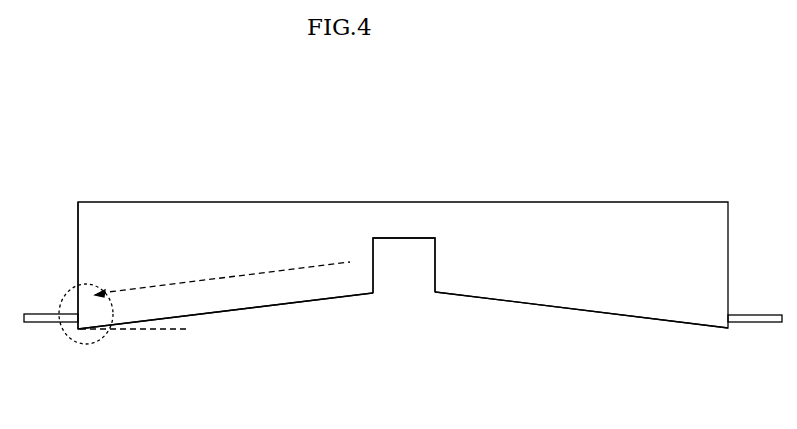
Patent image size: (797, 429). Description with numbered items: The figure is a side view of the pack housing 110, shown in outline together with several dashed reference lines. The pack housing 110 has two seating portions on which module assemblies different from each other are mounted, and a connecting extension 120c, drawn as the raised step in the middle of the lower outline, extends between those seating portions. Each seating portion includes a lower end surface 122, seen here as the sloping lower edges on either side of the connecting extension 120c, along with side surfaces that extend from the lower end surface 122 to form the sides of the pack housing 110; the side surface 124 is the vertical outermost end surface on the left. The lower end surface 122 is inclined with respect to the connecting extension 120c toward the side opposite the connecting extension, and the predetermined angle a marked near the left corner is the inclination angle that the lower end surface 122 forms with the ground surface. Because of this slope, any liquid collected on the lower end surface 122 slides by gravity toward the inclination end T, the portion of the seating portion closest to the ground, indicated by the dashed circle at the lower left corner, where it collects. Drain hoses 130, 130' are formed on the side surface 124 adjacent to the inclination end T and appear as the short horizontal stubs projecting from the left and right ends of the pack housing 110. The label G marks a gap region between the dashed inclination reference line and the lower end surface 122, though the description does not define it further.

The pack housing 110 is at (114, 107).
The side surface 124 is at (80, 223).
The gap / clearance G is at (237, 278).
The lower end surface 122 is at (263, 304).
The connecting extension 120c is at (403, 257).
The predetermined angle a is at (165, 323).
The inclination end T is at (90, 348).
The drain hose 130' is at (51, 355).
The drain hose 130 is at (755, 358).